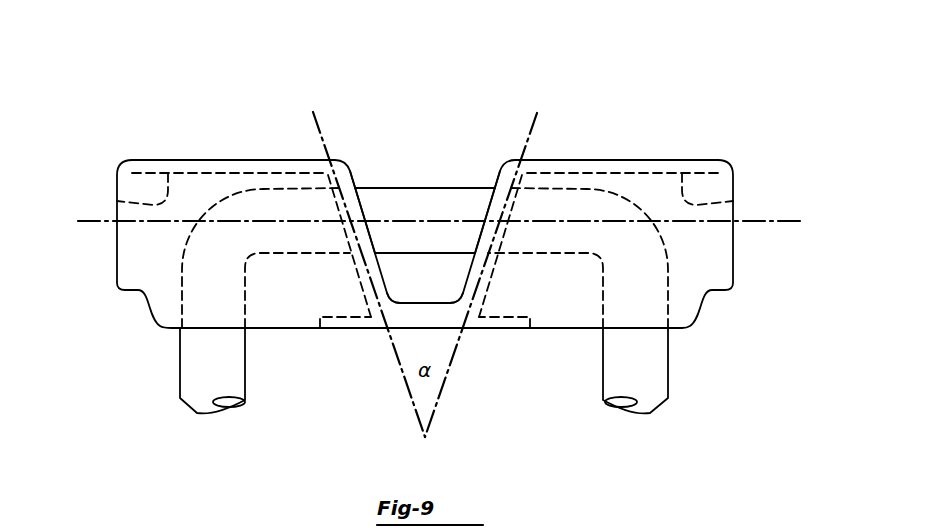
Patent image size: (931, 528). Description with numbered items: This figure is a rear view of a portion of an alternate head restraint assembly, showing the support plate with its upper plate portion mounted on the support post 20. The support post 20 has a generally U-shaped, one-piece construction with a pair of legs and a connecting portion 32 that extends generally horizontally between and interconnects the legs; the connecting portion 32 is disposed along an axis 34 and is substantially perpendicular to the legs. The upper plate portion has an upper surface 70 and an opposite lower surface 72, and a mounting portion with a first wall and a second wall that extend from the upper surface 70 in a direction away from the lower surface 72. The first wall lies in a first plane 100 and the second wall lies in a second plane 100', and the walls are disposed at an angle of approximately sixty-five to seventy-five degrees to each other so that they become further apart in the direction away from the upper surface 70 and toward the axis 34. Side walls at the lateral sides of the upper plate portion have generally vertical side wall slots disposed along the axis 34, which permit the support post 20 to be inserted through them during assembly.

The support post 20 is at (178, 370).
The connecting portion 32 is at (398, 188).
The axis 34 is at (443, 220).
The upper surface 70 is at (427, 303).
The lower surface 72 is at (492, 331).
The first plane 100 is at (369, 277).
The second plane 100' is at (481, 277).